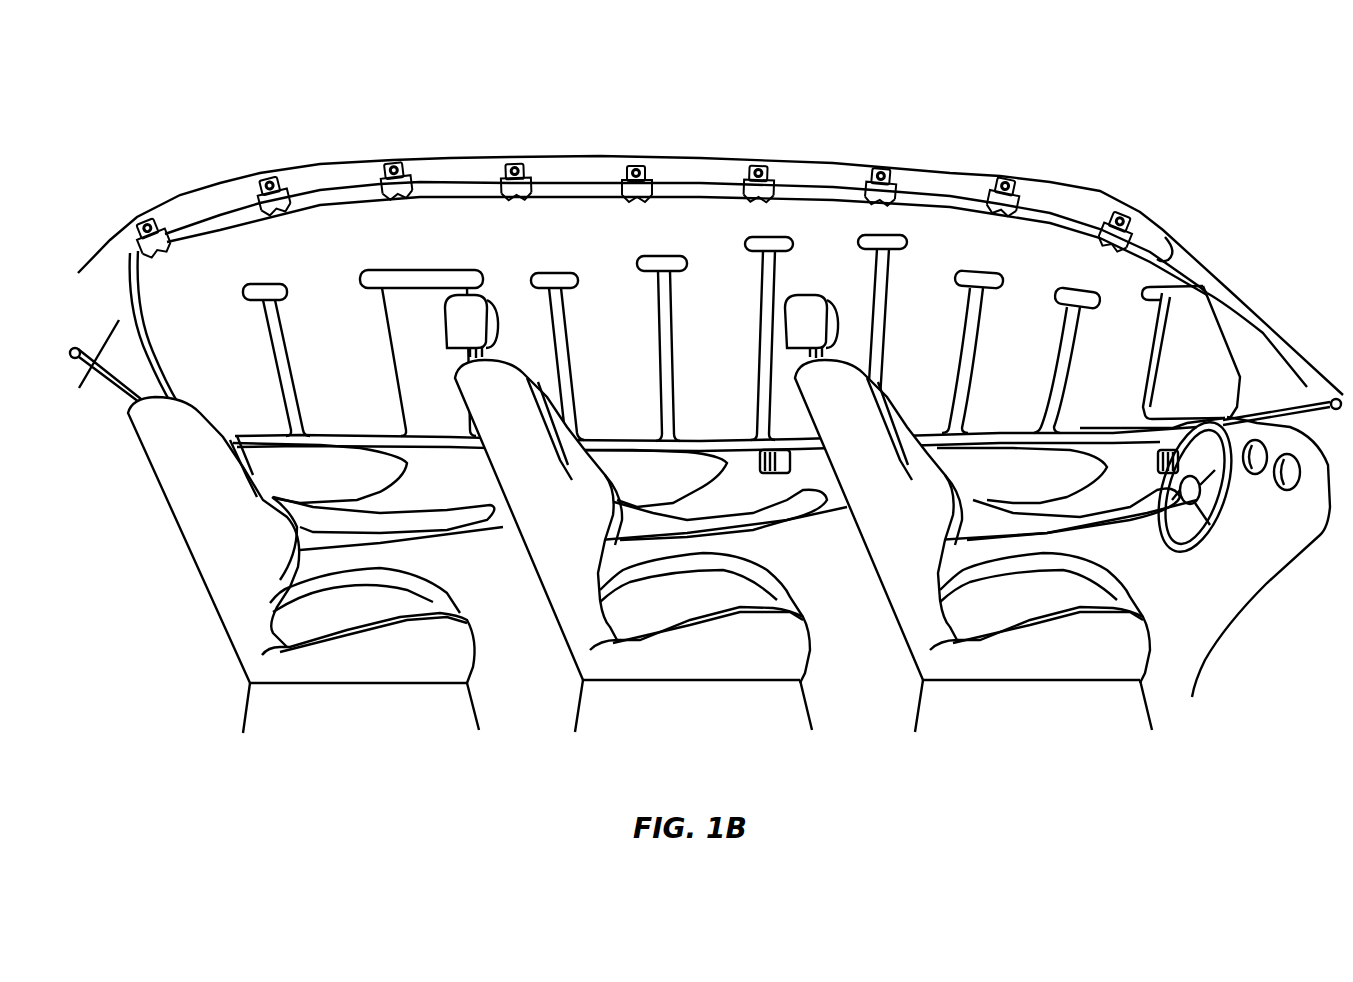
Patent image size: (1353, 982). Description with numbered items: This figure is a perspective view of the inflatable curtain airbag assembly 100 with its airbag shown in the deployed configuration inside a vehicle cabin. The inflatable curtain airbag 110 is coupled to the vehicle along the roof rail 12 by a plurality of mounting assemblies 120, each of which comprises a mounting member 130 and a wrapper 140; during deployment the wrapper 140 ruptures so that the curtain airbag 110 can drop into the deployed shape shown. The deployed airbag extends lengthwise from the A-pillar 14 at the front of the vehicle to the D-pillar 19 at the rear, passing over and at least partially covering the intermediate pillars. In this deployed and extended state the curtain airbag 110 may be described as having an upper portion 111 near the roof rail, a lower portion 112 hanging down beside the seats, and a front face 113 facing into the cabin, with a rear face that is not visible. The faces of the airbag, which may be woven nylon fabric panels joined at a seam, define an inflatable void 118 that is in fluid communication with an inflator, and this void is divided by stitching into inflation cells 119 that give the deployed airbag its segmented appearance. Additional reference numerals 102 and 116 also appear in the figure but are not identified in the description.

The roof rail 12 is at (335, 173).
The A-pillar 14 is at (1247, 310).
The D-pillar 19 is at (103, 260).
The airbag assembly 100 is at (1060, 127).
The headliner 102 is at (492, 233).
The inflatable curtain airbag 110 is at (929, 169).
The upper portion 111 is at (1108, 258).
The lower portion 112 is at (1130, 397).
The front face 113 is at (659, 233).
The inflatable chamber 116 is at (1015, 243).
The inflatable void 118 is at (820, 247).
The inflation cells 119 is at (525, 307).
The mounting assembly 120 is at (733, 170).
The mounting member 130 is at (747, 177).
The wrapper 140 is at (782, 188).